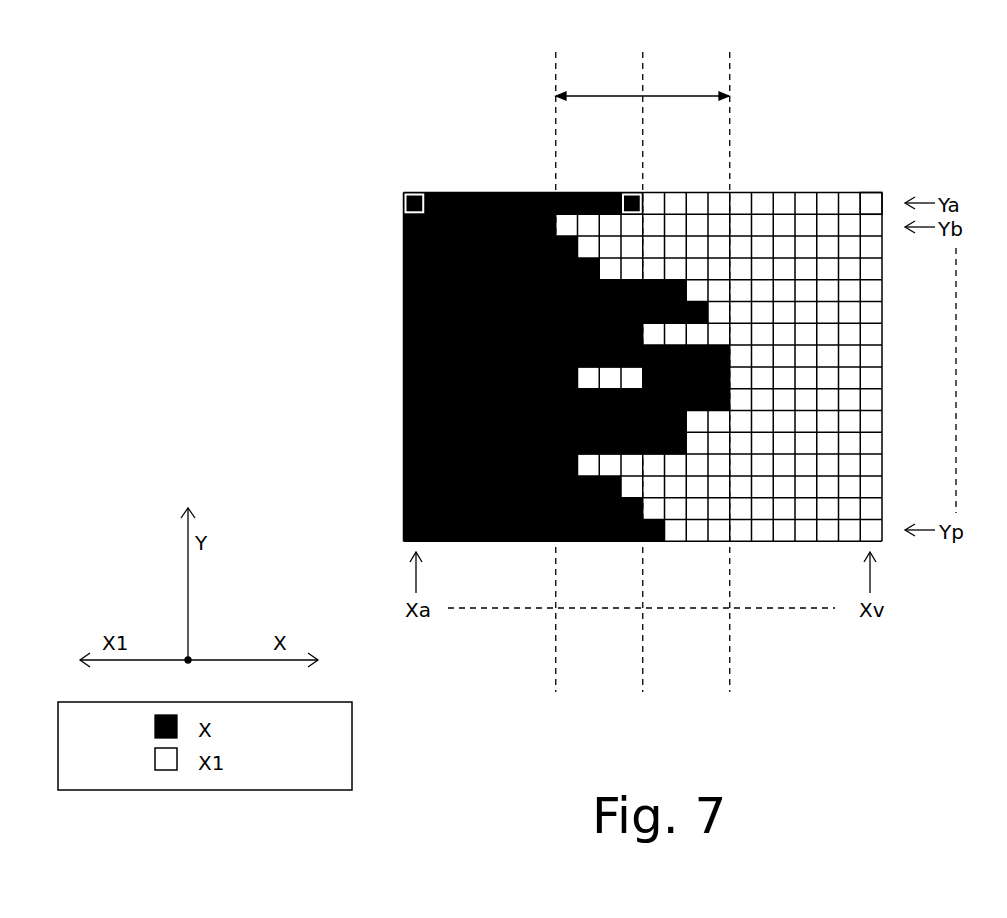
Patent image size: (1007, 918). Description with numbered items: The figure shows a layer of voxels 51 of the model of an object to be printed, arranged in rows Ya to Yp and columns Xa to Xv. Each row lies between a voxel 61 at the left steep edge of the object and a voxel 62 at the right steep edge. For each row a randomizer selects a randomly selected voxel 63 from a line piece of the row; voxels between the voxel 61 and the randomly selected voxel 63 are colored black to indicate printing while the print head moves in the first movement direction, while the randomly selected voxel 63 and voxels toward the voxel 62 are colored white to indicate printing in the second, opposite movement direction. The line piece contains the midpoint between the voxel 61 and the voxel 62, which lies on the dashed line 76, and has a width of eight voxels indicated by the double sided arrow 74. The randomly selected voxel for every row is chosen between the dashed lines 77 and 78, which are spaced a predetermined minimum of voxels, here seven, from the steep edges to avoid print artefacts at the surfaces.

The layer of voxels 51 is at (925, 117).
The voxel at the left steep edge 61 is at (415, 193).
The voxel at the right steep edge 62 is at (868, 203).
The randomly selected voxel 63 is at (633, 192).
The double sided arrow 74 is at (620, 93).
The dashed line 76 is at (643, 115).
The dashed line 77 is at (729, 63).
The dashed line 78 is at (555, 105).